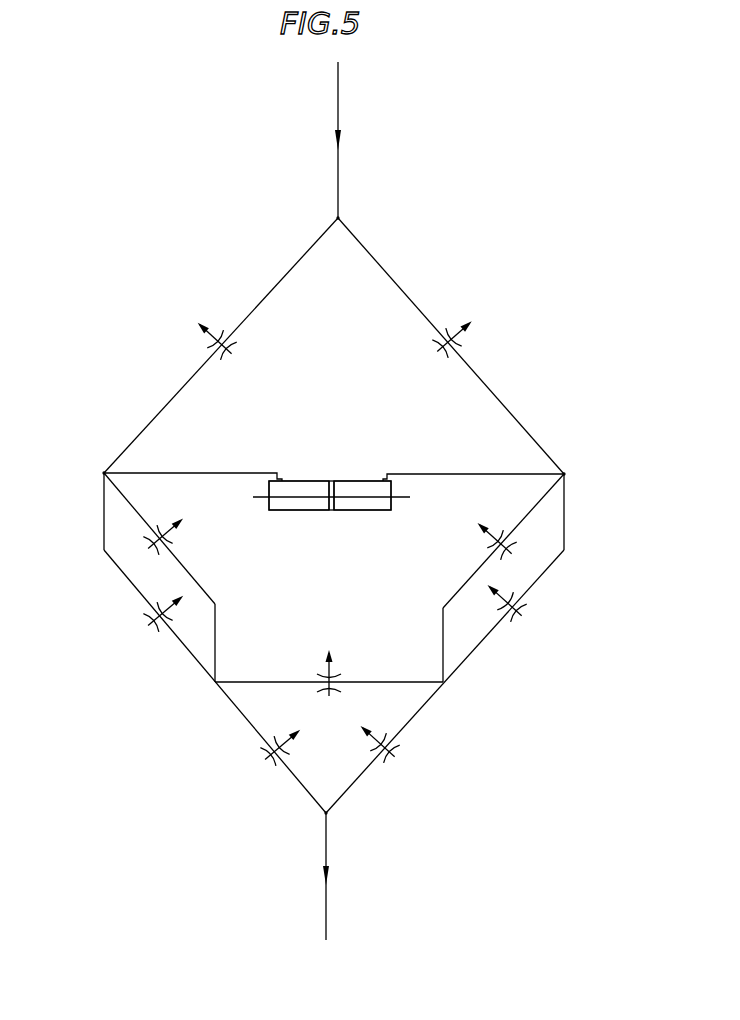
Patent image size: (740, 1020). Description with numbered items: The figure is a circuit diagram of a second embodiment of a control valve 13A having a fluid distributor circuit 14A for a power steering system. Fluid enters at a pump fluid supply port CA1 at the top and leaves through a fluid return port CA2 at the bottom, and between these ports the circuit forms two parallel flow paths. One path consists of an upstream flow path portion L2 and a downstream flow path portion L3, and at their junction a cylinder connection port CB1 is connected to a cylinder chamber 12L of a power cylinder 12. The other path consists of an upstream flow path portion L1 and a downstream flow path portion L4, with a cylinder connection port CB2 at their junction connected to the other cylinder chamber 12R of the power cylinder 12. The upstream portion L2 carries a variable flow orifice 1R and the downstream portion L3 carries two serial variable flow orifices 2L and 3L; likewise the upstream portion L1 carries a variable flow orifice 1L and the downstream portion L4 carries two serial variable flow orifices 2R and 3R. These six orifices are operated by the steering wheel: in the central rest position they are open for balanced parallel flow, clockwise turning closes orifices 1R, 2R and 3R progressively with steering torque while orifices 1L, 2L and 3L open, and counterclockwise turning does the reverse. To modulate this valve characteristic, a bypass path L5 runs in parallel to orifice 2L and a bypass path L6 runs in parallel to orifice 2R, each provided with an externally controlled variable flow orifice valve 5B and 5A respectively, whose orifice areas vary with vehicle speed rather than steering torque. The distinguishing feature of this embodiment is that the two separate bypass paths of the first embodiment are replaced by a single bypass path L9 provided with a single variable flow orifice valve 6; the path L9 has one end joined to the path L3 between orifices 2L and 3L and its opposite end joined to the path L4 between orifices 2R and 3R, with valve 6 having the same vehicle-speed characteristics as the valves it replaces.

The control valve 13A is at (387, 197).
The fluid distributor circuit 14A is at (427, 291).
The pump fluid supply port CA1 is at (338, 218).
The fluid return port CA2 is at (326, 813).
The cylinder connection port CB1 is at (564, 474).
The cylinder connection port CB2 is at (104, 473).
The upstream flow path portion L1 is at (300, 258).
The upstream flow path portion L2 is at (377, 258).
The downstream flow path portion L3 is at (542, 575).
The downstream flow path portion L4 is at (116, 576).
The bypass path L5 is at (540, 503).
The bypass path L6 is at (140, 508).
The bypass path L9 is at (400, 681).
The variable flow orifice 1L is at (208, 333).
The variable flow orifice 1R is at (460, 336).
The variable flow orifice 2L is at (507, 611).
The variable flow orifice 2R is at (157, 621).
The variable flow orifice 3L is at (383, 752).
The variable flow orifice 3R is at (273, 755).
The externally controlled variable flow orifice valve 5A is at (171, 533).
The externally controlled variable flow orifice valve 5B is at (490, 527).
The variable flow orifice valve 6 is at (320, 670).
The power cylinder 12 is at (331, 481).
The cylinder chamber 12R is at (308, 510).
The cylinder chamber 12L is at (371, 510).